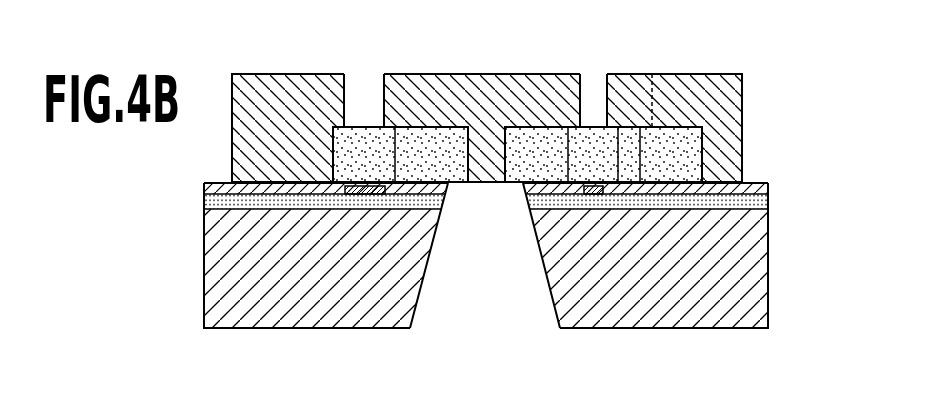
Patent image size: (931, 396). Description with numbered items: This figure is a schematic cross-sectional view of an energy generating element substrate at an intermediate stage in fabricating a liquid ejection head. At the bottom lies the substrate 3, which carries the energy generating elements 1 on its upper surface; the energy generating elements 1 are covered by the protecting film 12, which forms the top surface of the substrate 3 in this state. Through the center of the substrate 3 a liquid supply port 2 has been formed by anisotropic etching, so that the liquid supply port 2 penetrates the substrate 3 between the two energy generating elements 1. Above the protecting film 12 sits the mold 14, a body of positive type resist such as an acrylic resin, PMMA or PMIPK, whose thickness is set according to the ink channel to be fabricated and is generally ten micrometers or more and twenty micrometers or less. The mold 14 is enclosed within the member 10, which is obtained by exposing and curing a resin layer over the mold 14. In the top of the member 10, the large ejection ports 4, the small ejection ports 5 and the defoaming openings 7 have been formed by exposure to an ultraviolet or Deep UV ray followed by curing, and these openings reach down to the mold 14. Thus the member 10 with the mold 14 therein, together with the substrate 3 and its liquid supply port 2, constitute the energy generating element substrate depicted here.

The energy generating element 1 is at (372, 194).
The liquid supply port 2 is at (490, 310).
The substrate 3 is at (757, 268).
The large ejection port 4 is at (381, 90).
The small ejection port 5 is at (605, 90).
The defoaming opening 7 is at (686, 85).
The member 10 is at (497, 88).
The protecting film 12 is at (760, 188).
The mold 14 is at (432, 142).